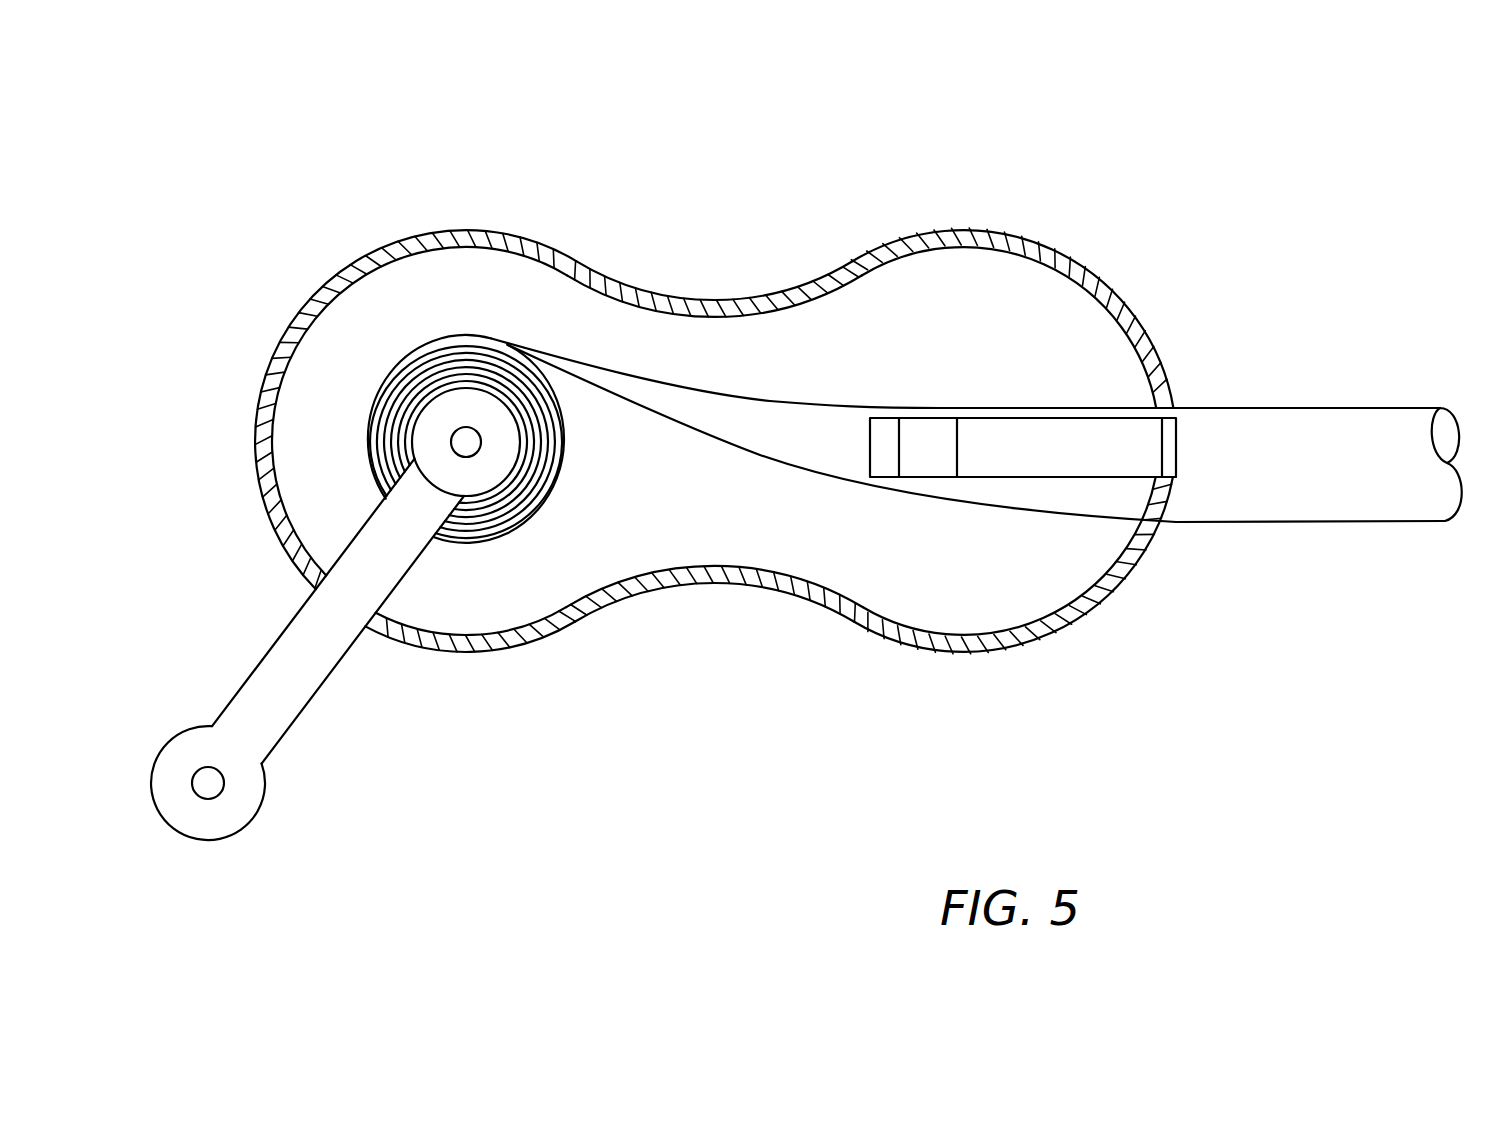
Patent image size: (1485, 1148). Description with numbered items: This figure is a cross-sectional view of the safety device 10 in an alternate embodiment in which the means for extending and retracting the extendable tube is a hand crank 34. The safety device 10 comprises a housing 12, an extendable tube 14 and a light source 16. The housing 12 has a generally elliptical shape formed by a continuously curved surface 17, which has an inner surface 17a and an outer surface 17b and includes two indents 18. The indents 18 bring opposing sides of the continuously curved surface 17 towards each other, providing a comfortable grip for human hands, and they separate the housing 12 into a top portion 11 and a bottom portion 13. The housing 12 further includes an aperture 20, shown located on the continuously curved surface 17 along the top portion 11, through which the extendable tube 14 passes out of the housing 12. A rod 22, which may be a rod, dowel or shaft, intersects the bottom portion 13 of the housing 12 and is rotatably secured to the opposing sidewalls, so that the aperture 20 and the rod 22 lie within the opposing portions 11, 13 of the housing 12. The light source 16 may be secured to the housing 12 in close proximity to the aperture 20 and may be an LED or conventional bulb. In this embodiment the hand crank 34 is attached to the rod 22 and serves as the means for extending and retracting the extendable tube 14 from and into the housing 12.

The safety device 10 is at (198, 173).
The top portion 11 is at (989, 584).
The housing 12 is at (1056, 213).
The bottom portion 13 is at (342, 406).
The extendable tube 14 is at (1337, 408).
The light source 16 is at (1133, 477).
The continuously curved surface 17 is at (885, 245).
The inner surface 17a is at (967, 227).
The outer surface 17b is at (470, 228).
The indents 18 is at (687, 297).
The aperture 20 is at (1172, 473).
The rod 22 is at (462, 437).
The hand crank 34 is at (313, 703).